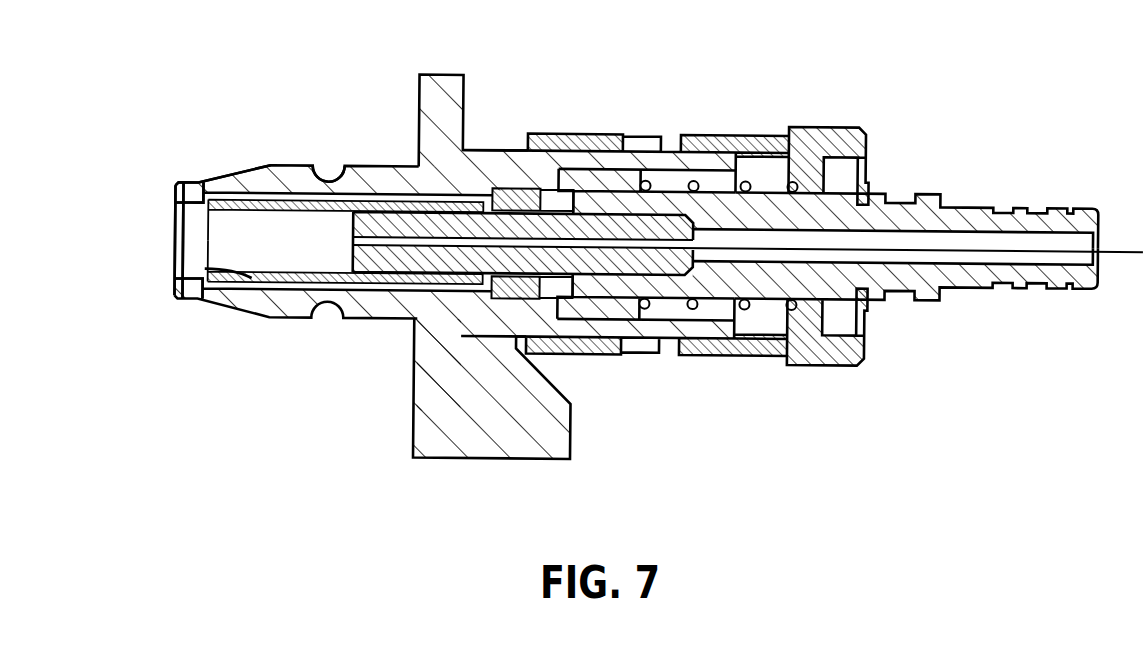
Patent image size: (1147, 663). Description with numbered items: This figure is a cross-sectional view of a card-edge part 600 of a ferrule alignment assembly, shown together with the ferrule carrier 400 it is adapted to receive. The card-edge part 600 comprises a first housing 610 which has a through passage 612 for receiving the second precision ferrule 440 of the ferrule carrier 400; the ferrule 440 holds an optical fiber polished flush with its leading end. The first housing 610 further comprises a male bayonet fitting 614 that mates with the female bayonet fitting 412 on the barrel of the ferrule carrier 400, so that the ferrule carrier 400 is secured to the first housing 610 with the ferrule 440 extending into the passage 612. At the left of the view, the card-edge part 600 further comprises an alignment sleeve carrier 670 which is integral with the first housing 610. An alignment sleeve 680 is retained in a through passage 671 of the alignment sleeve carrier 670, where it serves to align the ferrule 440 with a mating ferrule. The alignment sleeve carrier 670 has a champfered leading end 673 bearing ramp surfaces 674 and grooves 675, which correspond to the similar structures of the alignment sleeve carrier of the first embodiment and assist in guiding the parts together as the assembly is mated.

The ferrule carrier 400 is at (895, 178).
The female bayonet fitting 412 is at (743, 111).
The second precision ferrule 440 is at (722, 315).
The card-edge part 600 is at (482, 182).
The first housing 610 is at (493, 235).
The through passage 612 is at (566, 320).
The male bayonet fitting 614 is at (827, 312).
The alignment sleeve carrier 670 is at (333, 282).
The through passage 671 is at (283, 241).
The champfered leading end 673 is at (149, 238).
The ramp surfaces 674 is at (229, 131).
The grooves 675 is at (329, 132).
The alignment sleeve 680 is at (170, 262).